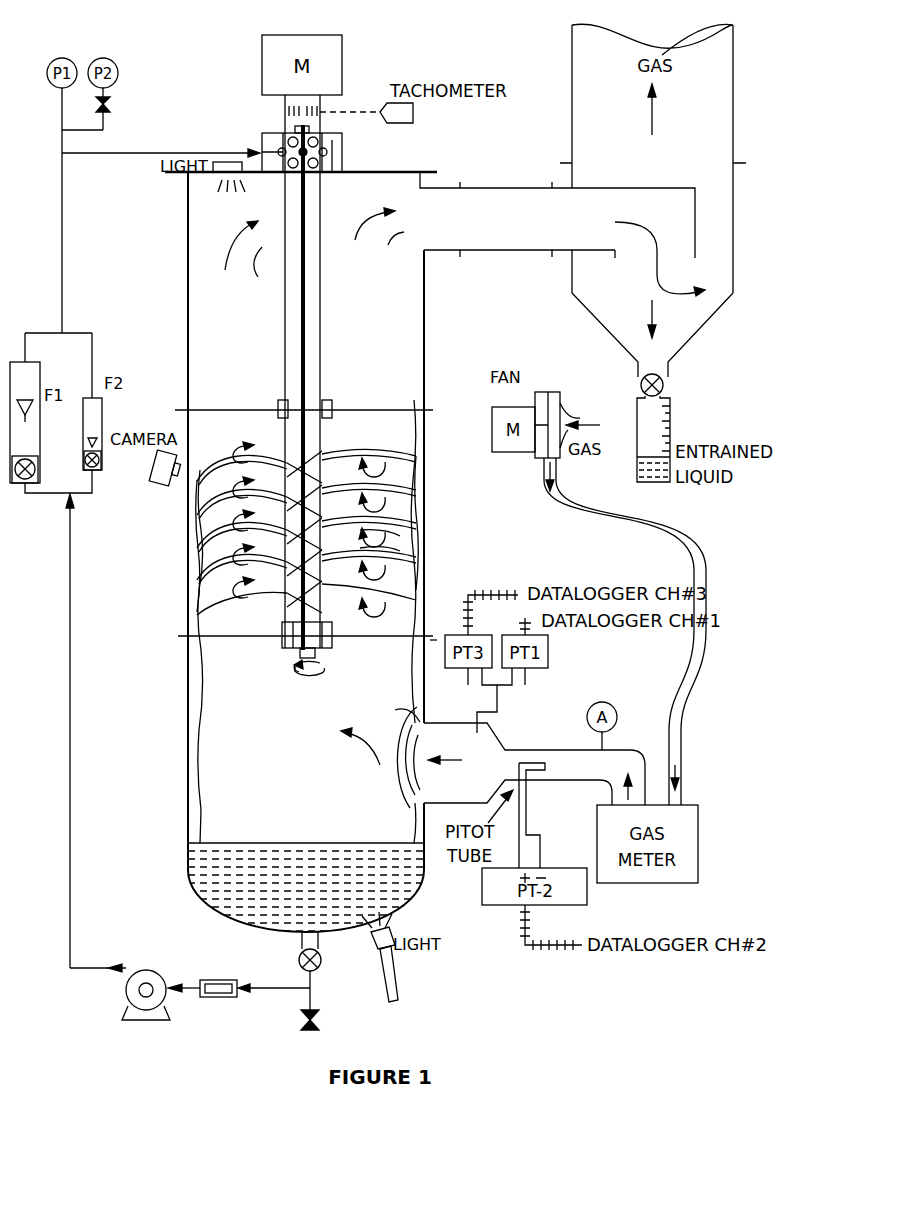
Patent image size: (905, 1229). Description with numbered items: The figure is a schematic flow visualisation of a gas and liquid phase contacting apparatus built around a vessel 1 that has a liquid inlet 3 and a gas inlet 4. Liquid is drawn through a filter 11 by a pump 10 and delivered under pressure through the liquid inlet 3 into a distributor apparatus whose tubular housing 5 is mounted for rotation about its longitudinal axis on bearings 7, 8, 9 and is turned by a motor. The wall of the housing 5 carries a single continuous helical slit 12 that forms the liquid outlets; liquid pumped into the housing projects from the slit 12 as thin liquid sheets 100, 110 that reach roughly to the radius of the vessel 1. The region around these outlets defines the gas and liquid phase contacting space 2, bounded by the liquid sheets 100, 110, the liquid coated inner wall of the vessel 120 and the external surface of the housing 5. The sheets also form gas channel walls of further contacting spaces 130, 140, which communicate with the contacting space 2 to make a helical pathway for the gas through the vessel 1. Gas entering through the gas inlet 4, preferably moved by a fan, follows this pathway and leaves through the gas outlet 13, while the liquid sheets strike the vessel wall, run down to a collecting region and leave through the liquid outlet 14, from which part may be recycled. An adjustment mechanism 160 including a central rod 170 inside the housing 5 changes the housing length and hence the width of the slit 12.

The vessel 1 is at (425, 445).
The gas and liquid phase contacting space 2 is at (388, 512).
The liquid inlet 3 is at (229, 150).
The gas inlet 4 is at (524, 750).
The distributor apparatus housing 5 is at (322, 218).
The bearing 7 is at (342, 133).
The bearing 8 is at (332, 400).
The bearing 9 is at (282, 650).
The pump 10 is at (120, 966).
The filter 11 is at (215, 962).
The slit 12 is at (198, 617).
The gas outlet 13 is at (503, 255).
The liquid outlet 14 is at (322, 956).
The liquid sheet 100 is at (400, 460).
The liquid sheet 110 is at (397, 550).
The liquid coated inner wall of the vessel 120 is at (418, 484).
The contacting space 130 is at (345, 462).
The contacting space 140 is at (393, 545).
The adjustment mechanism 160 is at (310, 660).
The central rod 170 is at (302, 325).